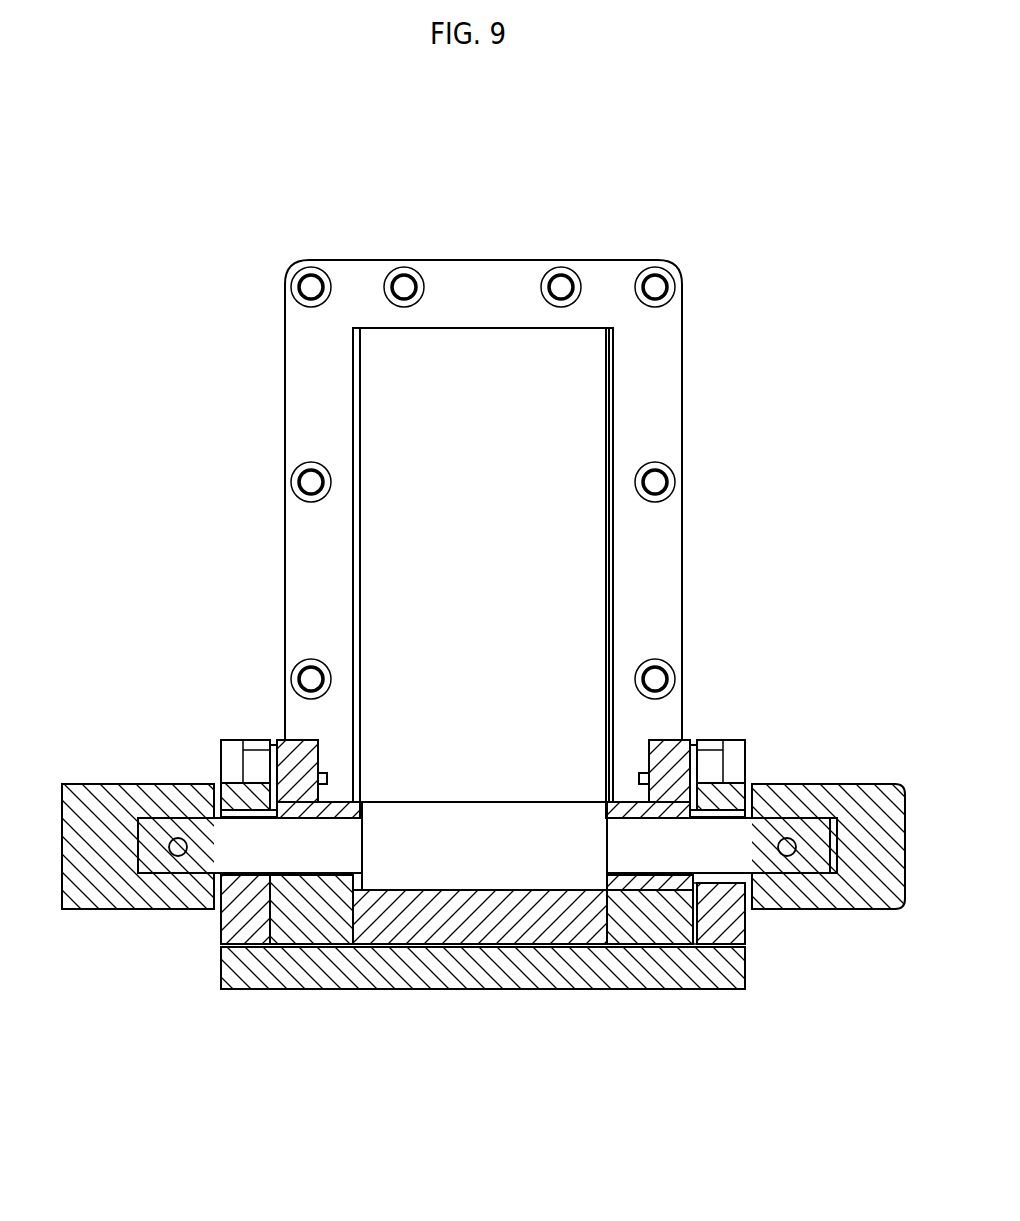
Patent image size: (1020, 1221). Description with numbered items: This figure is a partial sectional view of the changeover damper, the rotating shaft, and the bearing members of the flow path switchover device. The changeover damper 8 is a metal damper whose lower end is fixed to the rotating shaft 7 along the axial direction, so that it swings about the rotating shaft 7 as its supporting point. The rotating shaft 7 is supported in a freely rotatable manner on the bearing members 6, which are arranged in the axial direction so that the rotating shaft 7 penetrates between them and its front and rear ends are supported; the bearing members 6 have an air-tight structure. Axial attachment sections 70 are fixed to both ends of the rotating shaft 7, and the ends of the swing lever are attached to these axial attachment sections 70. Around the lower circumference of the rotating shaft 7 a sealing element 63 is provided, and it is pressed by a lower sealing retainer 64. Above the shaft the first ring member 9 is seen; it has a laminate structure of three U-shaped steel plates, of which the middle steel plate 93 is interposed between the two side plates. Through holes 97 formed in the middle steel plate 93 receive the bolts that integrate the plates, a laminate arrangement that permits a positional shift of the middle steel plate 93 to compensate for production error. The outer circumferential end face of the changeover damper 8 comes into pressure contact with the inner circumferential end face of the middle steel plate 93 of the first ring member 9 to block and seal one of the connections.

The first ring member 9 is at (752, 246).
The middle steel plate 93 is at (465, 283).
The through holes 97 is at (563, 285).
The changeover damper 8 is at (585, 452).
The bearing members 6 is at (706, 740).
The rotating shaft 7 is at (765, 830).
The axial attachment sections 70 is at (118, 900).
The sealing element 63 is at (452, 945).
The lower sealing retainer 64 is at (618, 980).